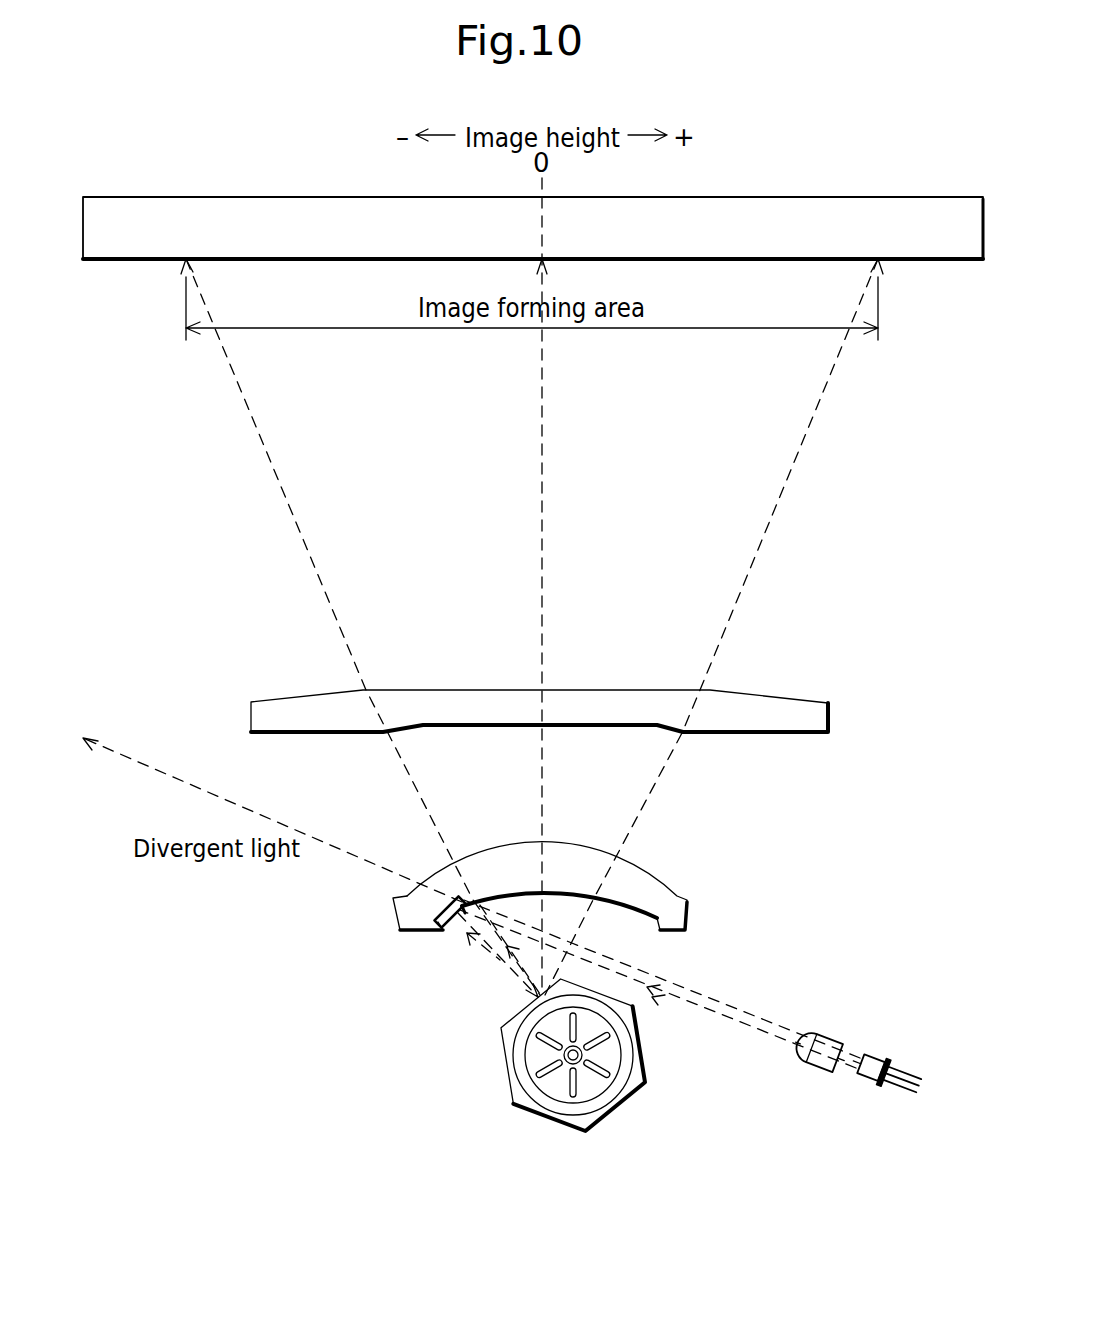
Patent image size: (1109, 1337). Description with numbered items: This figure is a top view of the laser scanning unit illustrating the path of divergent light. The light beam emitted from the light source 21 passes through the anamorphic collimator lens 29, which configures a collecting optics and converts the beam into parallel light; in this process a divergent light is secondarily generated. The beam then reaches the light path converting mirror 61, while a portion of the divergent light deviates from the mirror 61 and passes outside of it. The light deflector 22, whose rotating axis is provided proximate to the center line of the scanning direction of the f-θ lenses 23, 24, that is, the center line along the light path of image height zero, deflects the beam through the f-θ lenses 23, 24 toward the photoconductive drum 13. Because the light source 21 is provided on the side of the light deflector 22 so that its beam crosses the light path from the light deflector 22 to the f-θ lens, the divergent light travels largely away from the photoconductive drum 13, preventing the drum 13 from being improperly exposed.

The photoconductive drum 13 is at (845, 197).
The light source 21 is at (878, 1057).
The light deflector 22 is at (645, 1052).
The f-θ lens 23 is at (688, 917).
The f-θ lens 24 is at (733, 733).
The anamorphic collimator lens 29 is at (813, 1066).
The light path converting mirror 61 is at (433, 913).